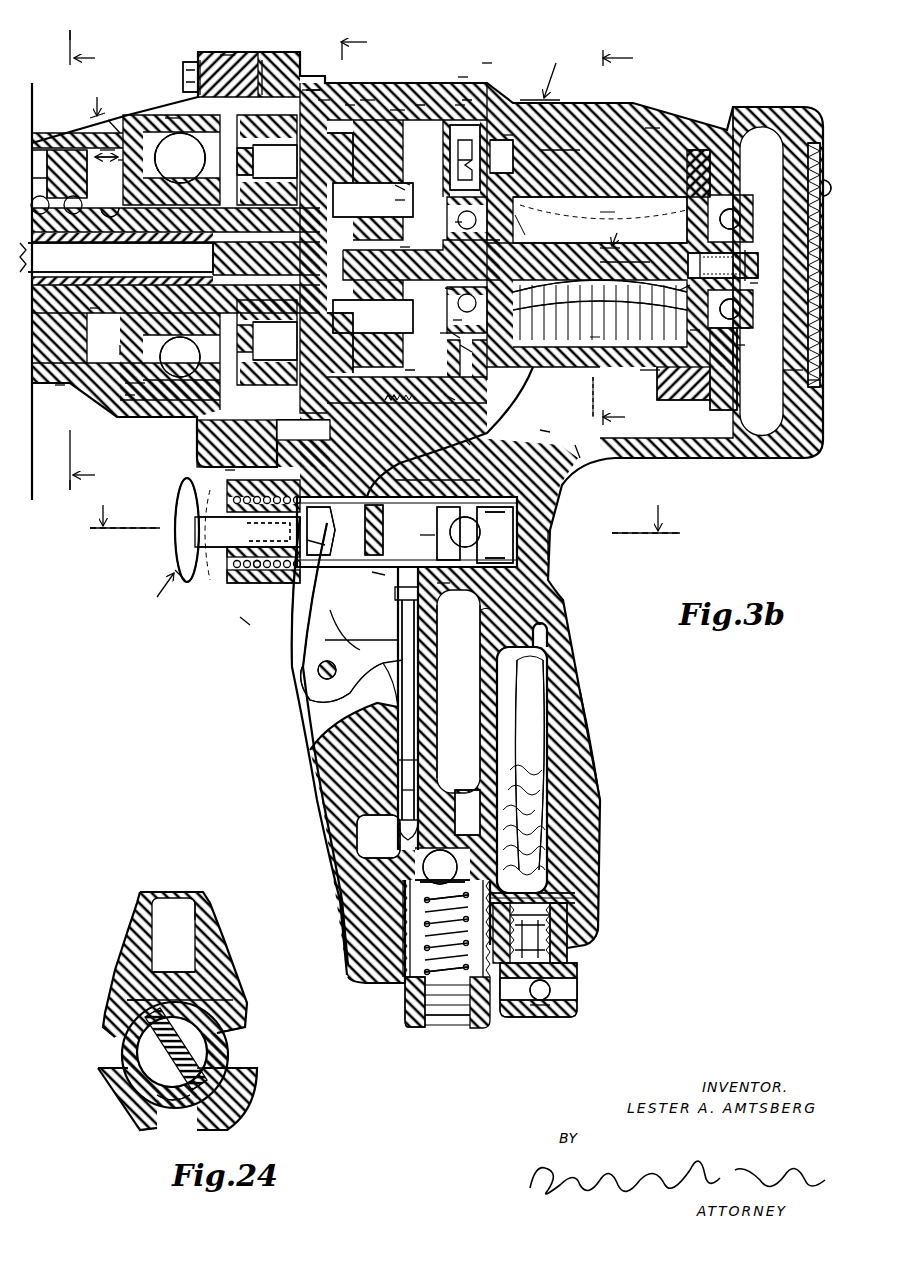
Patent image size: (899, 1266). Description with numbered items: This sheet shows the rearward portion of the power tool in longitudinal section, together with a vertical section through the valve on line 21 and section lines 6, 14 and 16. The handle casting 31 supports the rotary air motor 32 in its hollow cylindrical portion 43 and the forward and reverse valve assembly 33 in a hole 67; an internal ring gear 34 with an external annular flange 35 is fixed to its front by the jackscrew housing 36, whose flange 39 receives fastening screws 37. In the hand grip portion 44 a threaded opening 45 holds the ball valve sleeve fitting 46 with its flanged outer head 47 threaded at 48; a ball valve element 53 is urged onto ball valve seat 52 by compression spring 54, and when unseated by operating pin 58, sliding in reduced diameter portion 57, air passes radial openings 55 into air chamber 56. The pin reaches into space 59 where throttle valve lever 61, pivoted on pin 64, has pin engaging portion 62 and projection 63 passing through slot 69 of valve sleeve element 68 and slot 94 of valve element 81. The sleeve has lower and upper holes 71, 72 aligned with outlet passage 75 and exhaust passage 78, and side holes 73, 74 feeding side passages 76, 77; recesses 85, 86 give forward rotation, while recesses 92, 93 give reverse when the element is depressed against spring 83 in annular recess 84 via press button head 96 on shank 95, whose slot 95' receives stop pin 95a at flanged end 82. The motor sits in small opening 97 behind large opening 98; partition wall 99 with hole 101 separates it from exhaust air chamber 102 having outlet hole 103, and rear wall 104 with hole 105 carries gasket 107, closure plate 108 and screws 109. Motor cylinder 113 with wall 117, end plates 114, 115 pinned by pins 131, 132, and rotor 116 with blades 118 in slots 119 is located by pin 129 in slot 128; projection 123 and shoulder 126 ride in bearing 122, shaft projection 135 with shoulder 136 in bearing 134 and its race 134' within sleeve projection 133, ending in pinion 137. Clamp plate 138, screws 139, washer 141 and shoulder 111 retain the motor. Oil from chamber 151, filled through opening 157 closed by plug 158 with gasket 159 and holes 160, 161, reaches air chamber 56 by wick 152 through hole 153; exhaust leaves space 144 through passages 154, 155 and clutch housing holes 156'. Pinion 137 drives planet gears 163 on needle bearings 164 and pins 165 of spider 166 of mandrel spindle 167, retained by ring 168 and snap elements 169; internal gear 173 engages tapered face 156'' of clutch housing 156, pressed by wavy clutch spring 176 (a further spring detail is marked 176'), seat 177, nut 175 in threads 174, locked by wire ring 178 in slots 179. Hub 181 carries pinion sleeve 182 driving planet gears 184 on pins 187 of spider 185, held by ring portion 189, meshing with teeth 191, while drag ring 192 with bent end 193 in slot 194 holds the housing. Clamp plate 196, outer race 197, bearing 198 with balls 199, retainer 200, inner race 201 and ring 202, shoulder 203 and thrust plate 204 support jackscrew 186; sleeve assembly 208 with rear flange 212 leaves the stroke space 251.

In FIG. 3B, the section line 6 is at (91, 260).
In FIG. 3B, the handle block 14 is at (411, 253).
In FIG. 3B, the section line 16 is at (630, 236).
In FIG. 3B, the section line 21 is at (384, 511).
In FIG. 3B, the handle casting 31 is at (543, 73).
In FIG. 3B, the rotary air motor 32 is at (610, 233).
In FIG. 3B, the forward and reverse valve assembly 33 is at (160, 591).
In FIG. 3B, the internal ring gear 34 is at (336, 68).
In FIG. 3B, the external annular flange 35 is at (268, 57).
In FIG. 3B, the jackscrew housing 36 is at (97, 100).
In FIG. 3B, the fastening screws 37 is at (191, 63).
In FIG. 3B, the flange 39 is at (227, 55).
In FIG. 3B, the hollow cylindrical portion 43 is at (650, 128).
In FIG. 3B, the hand grip portion 44 is at (596, 744).
In FIG. 24, the hand grip portion 44 is at (140, 920).
In FIG. 3B, the threaded opening 45 is at (390, 945).
In FIG. 3B, the ball valve sleeve fitting 46 is at (395, 890).
In FIG. 3B, the flanged outer head 47 is at (415, 1020).
In FIG. 3B, the internal threads 48 is at (460, 1018).
In FIG. 3B, the ball valve seat 52 is at (425, 875).
In FIG. 3B, the ball valve element 53 is at (425, 902).
In FIG. 3B, the compression spring 54 is at (433, 932).
In FIG. 3B, the radial openings 55 is at (460, 817).
In FIG. 3B, the air chamber 56 is at (470, 627).
In FIG. 3B, the reduced diameter portion 57 is at (400, 766).
In FIG. 3B, the operating pin 58 is at (417, 790).
In FIG. 3B, the space 59 is at (383, 690).
In FIG. 3B, the throttle valve lever 61 is at (323, 622).
In FIG. 3B, the pin engaging portion 62 is at (380, 612).
In FIG. 3B, the upwardly-extending projection 63 is at (318, 521).
In FIG. 3B, the pin 64 is at (317, 670).
In FIG. 3B, the hole 67 is at (548, 538).
In FIG. 3B, the valve sleeve element 68 is at (382, 505).
In FIG. 3B, the elongated bottom slot 69 is at (378, 575).
In FIG. 3B, the lower radial hole 71 is at (443, 583).
In FIG. 24, the lower radial hole 71 is at (167, 1105).
In FIG. 3B, the upper radial hole 72 is at (448, 507).
In FIG. 24, the upper radial hole 72 is at (183, 997).
In FIG. 24, the radial side hole 73 is at (135, 1065).
In FIG. 3B, the radial side hole 74 is at (520, 520).
In FIG. 24, the radial side hole 74 is at (225, 1060).
In FIG. 3B, the outlet passage 75 is at (491, 618).
In FIG. 24, the outlet passage 75 is at (157, 1118).
In FIG. 24, the side passage 76 is at (112, 1032).
In FIG. 24, the side passage 77 is at (227, 1028).
In FIG. 3B, the exhaust passage 78 is at (550, 428).
In FIG. 24, the exhaust passage 78 is at (195, 913).
In FIG. 3B, the forward and reverse valve element 81 is at (245, 620).
In FIG. 24, the forward and reverse valve element 81 is at (200, 1060).
In FIG. 3B, the flanged forward end 82 is at (230, 560).
In FIG. 3B, the compression spring 83 is at (257, 578).
In FIG. 3B, the annular recess 84 is at (277, 578).
In FIG. 3B, the recess 85 is at (480, 507).
In FIG. 3B, the recess 86 is at (475, 548).
In FIG. 3B, the recess 92 is at (427, 540).
In FIG. 24, the recess 92 is at (185, 1085).
In FIG. 3B, the recess 93 is at (450, 520).
In FIG. 24, the recess 93 is at (128, 1003).
In FIG. 3B, the elongated slot 94 is at (318, 545).
In FIG. 3B, the press button shank 95 is at (229, 573).
In FIG. 3B, the elongated side slot 95' is at (268, 505).
In FIG. 3B, the stop pin 95a is at (290, 583).
In FIG. 3B, the press button head 96 is at (180, 540).
In FIG. 3B, the small diameter opening 97 is at (653, 377).
In FIG. 3B, the large diameter front opening 98 is at (460, 105).
In FIG. 3B, the partition wall 99 is at (723, 365).
In FIG. 3B, the hole 101 is at (740, 346).
In FIG. 3B, the exhaust air chamber 102 is at (770, 372).
In FIG. 3B, the exhaust air outlet hole 103 is at (727, 128).
In FIG. 3B, the rear wall 104 is at (793, 378).
In FIG. 3B, the central hole 105 is at (793, 230).
In FIG. 3B, the gasket 107 is at (742, 306).
In FIG. 3B, the closure plate 108 is at (808, 440).
In FIG. 3B, the screws 109 is at (823, 380).
In FIG. 3B, the annular shoulder 111 is at (542, 432).
In FIG. 3B, the hollow cylinder 113 is at (557, 150).
In FIG. 3B, the front end plate 114 is at (520, 215).
In FIG. 3B, the rear end plate 115 is at (688, 152).
In FIG. 3B, the rotor 116 is at (625, 262).
In FIG. 3B, the cylinder wall 117 is at (621, 198).
In FIG. 3B, the blades 118 is at (614, 328).
In FIG. 3B, the radial slots 119 is at (596, 298).
In FIG. 3B, the ball bearing unit 122 is at (748, 228).
In FIG. 3B, the rearwardly-extending projection 123 is at (752, 283).
In FIG. 3B, the shoulder 126 is at (683, 290).
In FIG. 3B, the slot 128 is at (500, 145).
In FIG. 3B, the pin 129 is at (508, 135).
In FIG. 3B, the pin 131 is at (530, 225).
In FIG. 3B, the pin 132 is at (601, 204).
In FIG. 3B, the sleeve projection 133 is at (452, 333).
In FIG. 3B, the ball bearing unit 134 is at (438, 312).
In FIG. 3B, the inner race 134' is at (438, 212).
In FIG. 3B, the shaft projection 135 is at (445, 288).
In FIG. 3B, the shoulder 136 is at (560, 242).
In FIG. 3B, the pinion gear formation 137 is at (403, 247).
In FIG. 3B, the motor clamp plate 138 is at (465, 155).
In FIG. 3B, the fastening screws 139 is at (448, 400).
In FIG. 3B, the sealing washer 141 is at (490, 370).
In FIG. 3B, the exhaust outlet space 144 is at (570, 443).
In FIG. 3B, the oil-receiving chamber 151 is at (528, 720).
In FIG. 3B, the wick 152 is at (530, 670).
In FIG. 3B, the hole 153 is at (547, 625).
In FIG. 3B, the vertically-extending passage 154 is at (693, 331).
In FIG. 3B, the vertically-extending passage 155 is at (445, 350).
In FIG. 3B, the clutch housing 156 is at (402, 82).
In FIG. 3B, the holes 156' is at (346, 158).
In FIG. 3B, the tapered interior face 156'' is at (362, 77).
In FIG. 3B, the threaded opening 157 is at (562, 918).
In FIG. 3B, the screw plug 158 is at (572, 1012).
In FIG. 3B, the sealing gasket 159 is at (562, 938).
In FIG. 3B, the transverse hole 160 is at (542, 995).
In FIG. 3B, the transverse hole 161 is at (577, 990).
In FIG. 3B, the planet gears 163 is at (213, 247).
In FIG. 3B, the needle bearing units 164 is at (356, 212).
In FIG. 3B, the pins 165 is at (356, 331).
In FIG. 3B, the spider formation 166 is at (348, 365).
In FIG. 3B, the mandrel spindle 167 is at (78, 262).
In FIG. 3B, the planet gear retaining ring 168 is at (398, 187).
In FIG. 3B, the split snap elements 169 is at (398, 200).
In FIG. 3B, the internal gear 173 is at (367, 100).
In FIG. 3B, the internal threads 174 is at (437, 407).
In FIG. 3B, the nut 175 is at (408, 372).
In FIG. 3B, the wavy annular clutch spring 176 is at (507, 45).
In FIG. 3B, the pin 176' is at (408, 170).
In FIG. 3B, the clutch spring seat 177 is at (463, 77).
In FIG. 3B, the wire lock ring 178 is at (431, 329).
In FIG. 3B, the slots 179 is at (476, 449).
In FIG. 3B, the enlarged hub portion 181 is at (250, 352).
In FIG. 3B, the pinion sleeve 182 is at (95, 308).
In FIG. 3B, the planet gears 184 is at (197, 425).
In FIG. 3B, the spider 185 is at (200, 378).
In FIG. 3B, the jackscrew 186 is at (120, 160).
In FIG. 3B, the pins 187 is at (256, 178).
In FIG. 3B, the retaining ring portion 189 is at (313, 95).
In FIG. 3B, the gear teeth 191 is at (200, 450).
In FIG. 3B, the split drag spring ring 192 is at (325, 100).
In FIG. 3B, the bent end 193 is at (303, 430).
In FIG. 3B, the slot 194 is at (233, 470).
In FIG. 3B, the bearing clamp plate 196 is at (186, 80).
In FIG. 3B, the outer race 197 is at (170, 115).
In FIG. 3B, the ball bearing unit 198 is at (168, 172).
In FIG. 3B, the ball elements 199 is at (135, 383).
In FIG. 3B, the ball retainer 200 is at (160, 150).
In FIG. 3B, the inner race 201 is at (120, 350).
In FIG. 3B, the retaining ring 202 is at (137, 201).
In FIG. 3B, the shoulder 203 is at (110, 133).
In FIG. 3B, the thrust plate 204 is at (130, 393).
In FIG. 3B, the jackscrew sleeve assembly 208 is at (43, 150).
In FIG. 3B, the rear flange 212 is at (62, 350).
In FIG. 3B, the space 251 is at (108, 152).